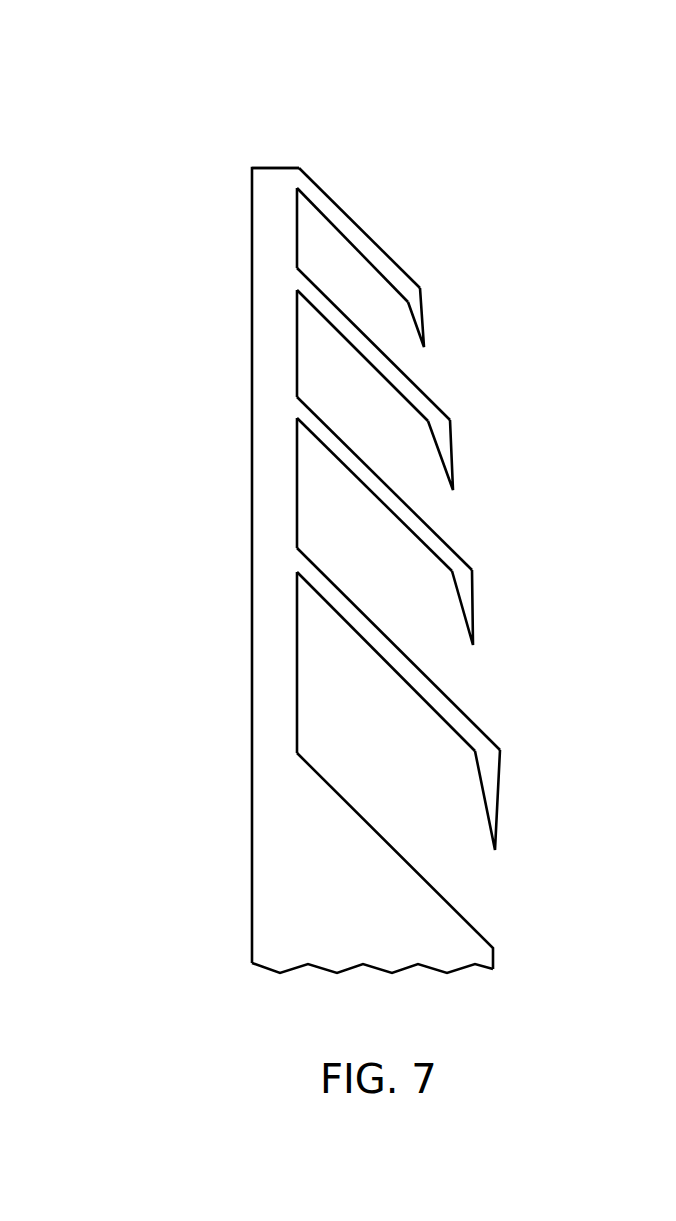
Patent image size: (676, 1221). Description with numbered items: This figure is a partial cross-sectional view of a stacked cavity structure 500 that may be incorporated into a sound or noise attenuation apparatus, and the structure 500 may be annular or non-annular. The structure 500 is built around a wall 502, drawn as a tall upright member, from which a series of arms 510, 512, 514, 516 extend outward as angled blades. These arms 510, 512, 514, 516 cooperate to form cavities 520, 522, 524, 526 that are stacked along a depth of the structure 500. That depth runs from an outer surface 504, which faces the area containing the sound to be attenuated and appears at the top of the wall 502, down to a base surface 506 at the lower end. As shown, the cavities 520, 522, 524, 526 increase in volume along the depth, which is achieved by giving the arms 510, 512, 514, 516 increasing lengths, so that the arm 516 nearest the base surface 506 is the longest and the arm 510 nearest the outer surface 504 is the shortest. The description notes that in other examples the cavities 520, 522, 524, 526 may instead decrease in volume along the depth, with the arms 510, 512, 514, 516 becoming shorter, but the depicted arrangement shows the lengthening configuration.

The stacked cavity structure 500 is at (114, 97).
The wall 502 is at (256, 268).
The outer surface 504 is at (275, 168).
The base surface 506 is at (487, 932).
The arm 510 is at (400, 282).
The arm 512 is at (409, 379).
The arm 514 is at (412, 514).
The arm 516 is at (424, 704).
The cavity 520 is at (418, 366).
The cavity 522 is at (433, 495).
The cavity 524 is at (440, 653).
The cavity 526 is at (463, 868).